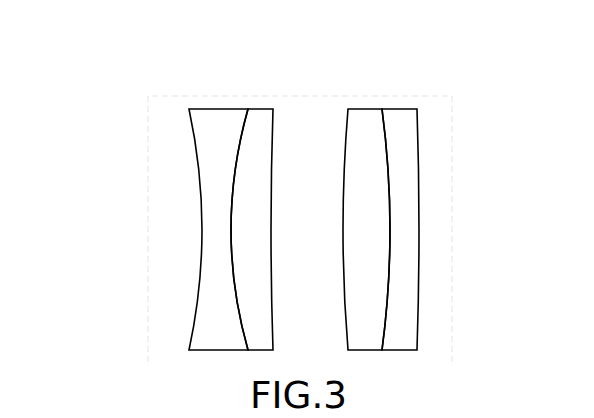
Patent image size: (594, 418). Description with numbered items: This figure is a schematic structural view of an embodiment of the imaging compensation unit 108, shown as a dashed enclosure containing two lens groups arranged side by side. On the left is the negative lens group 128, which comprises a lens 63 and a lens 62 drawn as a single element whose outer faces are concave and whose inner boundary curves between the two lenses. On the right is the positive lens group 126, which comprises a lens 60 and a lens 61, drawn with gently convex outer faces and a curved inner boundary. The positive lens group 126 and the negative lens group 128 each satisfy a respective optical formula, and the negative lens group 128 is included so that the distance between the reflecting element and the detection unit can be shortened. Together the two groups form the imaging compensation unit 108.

The imaging compensation unit 108 is at (452, 130).
The negative lens group 128 is at (236, 188).
The lens 63 is at (210, 121).
The lens 62 is at (255, 207).
The positive lens group 126 is at (382, 188).
The lens 60 is at (358, 121).
The lens 61 is at (404, 207).